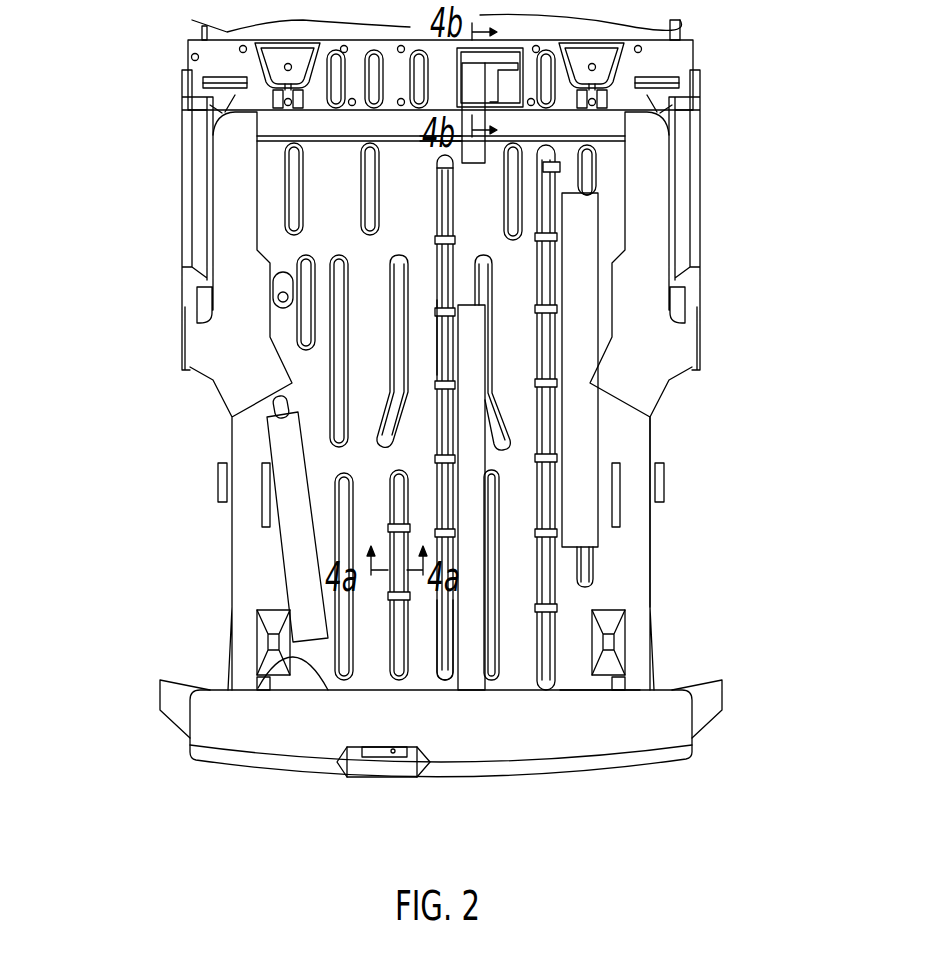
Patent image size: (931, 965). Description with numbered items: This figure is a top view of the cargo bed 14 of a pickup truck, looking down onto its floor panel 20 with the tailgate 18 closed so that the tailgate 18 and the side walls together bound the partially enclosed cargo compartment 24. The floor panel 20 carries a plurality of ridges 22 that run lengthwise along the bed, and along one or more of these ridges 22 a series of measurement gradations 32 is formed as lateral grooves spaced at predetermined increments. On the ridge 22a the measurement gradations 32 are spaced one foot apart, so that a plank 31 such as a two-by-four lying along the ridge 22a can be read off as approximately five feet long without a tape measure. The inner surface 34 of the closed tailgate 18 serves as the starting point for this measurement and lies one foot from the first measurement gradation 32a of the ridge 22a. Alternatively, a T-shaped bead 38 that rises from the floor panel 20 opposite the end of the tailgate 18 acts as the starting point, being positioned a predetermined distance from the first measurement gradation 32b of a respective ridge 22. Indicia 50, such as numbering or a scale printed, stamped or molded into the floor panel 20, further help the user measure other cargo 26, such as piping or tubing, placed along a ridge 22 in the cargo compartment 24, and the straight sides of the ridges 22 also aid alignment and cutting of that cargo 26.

The cargo bed 14 is at (145, 393).
The tailgate 18 is at (640, 752).
The floor panel 20 is at (637, 594).
The ridge 22 is at (376, 626).
The ridge 22a is at (426, 337).
The cargo compartment 24 is at (672, 580).
The cargo 26 is at (277, 535).
The plank 31 is at (583, 658).
The measurement gradations 32 is at (437, 236).
The first measurement gradation 32a is at (440, 610).
The first measurement gradation 32b is at (437, 165).
The inner surface 34 is at (258, 688).
The T-shaped bead 38 is at (528, 96).
The indicia 50 is at (539, 291).